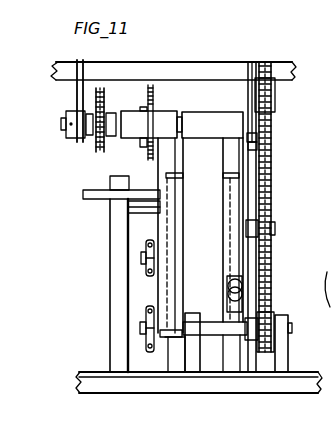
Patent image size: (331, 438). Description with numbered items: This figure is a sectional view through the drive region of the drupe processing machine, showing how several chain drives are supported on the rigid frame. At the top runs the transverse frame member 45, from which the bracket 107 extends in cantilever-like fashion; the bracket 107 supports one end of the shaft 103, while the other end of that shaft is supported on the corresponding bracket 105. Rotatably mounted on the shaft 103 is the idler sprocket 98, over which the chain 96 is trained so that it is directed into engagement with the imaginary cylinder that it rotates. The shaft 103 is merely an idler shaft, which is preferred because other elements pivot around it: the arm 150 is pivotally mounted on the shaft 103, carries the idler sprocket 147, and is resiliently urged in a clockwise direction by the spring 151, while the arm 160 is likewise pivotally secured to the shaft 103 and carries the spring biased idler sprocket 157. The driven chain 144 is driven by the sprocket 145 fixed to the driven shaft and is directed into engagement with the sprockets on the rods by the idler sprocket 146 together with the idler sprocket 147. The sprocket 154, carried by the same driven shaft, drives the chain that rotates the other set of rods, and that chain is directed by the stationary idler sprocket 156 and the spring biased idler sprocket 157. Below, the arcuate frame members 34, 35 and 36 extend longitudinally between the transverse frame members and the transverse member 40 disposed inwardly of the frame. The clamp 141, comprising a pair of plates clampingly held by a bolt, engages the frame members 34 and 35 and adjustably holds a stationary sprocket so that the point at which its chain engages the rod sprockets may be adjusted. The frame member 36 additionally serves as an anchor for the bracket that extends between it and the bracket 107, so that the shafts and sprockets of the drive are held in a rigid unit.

The transverse frame member 45 is at (190, 70).
The bracket 105 is at (76, 88).
The shaft 103 is at (61, 123).
The idler sprocket 98 is at (92, 140).
The chain 96 is at (107, 97).
The sprocket 154 is at (151, 96).
The bracket 107 is at (249, 95).
The sprocket 145 is at (275, 90).
The driven chain 144 is at (270, 165).
The idler sprocket 147 is at (272, 194).
The clamp 141 is at (115, 193).
The arm 150 is at (233, 157).
The spring biased idler sprocket 157 is at (145, 246).
The arm 160 is at (167, 235).
The spring 151 is at (228, 282).
The stationary idler sprocket 156 is at (145, 313).
The idler sprocket 146 is at (268, 305).
The arcuate frame member 34 is at (118, 348).
The transverse member 40 is at (117, 388).
The arcuate frame member 35 is at (177, 357).
The arcuate frame member 36 is at (233, 357).